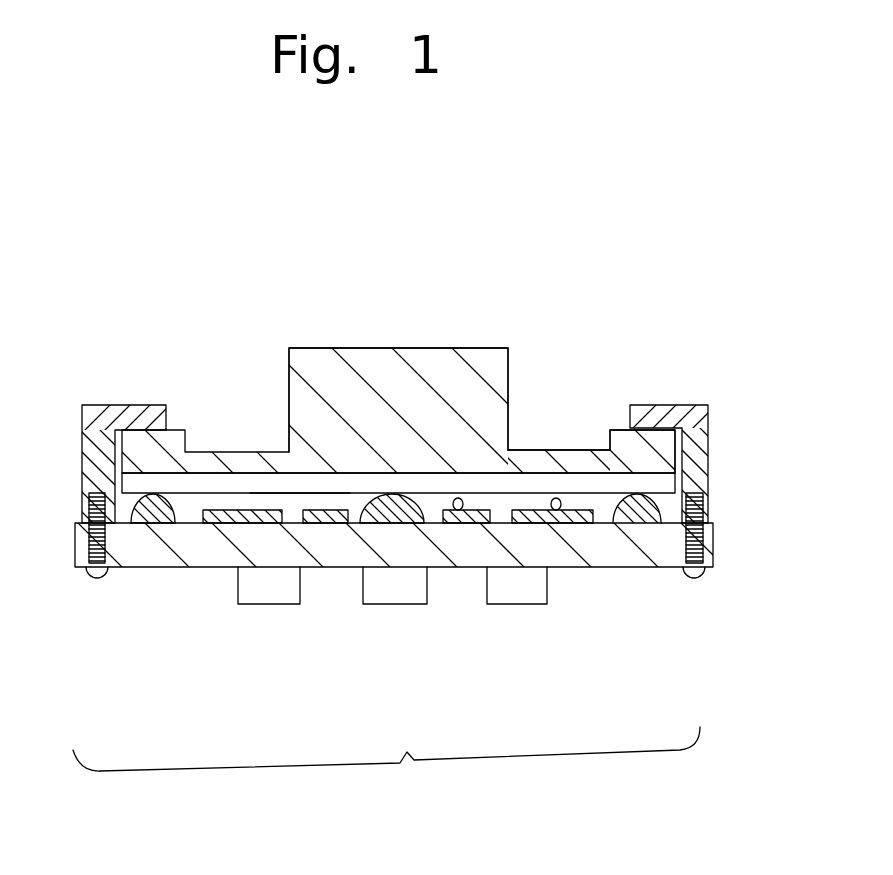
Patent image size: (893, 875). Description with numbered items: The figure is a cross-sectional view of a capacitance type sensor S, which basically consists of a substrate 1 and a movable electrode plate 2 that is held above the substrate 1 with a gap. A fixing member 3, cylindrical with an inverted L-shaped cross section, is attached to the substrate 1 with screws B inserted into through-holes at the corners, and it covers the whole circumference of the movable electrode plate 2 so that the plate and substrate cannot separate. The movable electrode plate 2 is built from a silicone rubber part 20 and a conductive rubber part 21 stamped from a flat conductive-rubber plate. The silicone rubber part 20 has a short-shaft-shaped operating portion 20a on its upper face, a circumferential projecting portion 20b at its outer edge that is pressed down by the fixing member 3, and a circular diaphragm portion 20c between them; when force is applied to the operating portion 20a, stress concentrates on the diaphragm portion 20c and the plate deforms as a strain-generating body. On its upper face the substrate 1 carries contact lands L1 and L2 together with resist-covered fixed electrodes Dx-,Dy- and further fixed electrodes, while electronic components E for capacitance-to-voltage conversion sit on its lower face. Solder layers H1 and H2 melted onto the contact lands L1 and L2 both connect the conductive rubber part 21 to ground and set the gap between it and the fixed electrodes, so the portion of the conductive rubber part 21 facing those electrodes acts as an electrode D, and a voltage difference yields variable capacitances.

The capacitance type sensor S is at (235, 333).
The substrate 1 is at (713, 538).
The movable electrode plate 2 is at (441, 344).
The silicone rubber part 20 is at (426, 337).
The operating portion 20a is at (443, 357).
The circumferential projecting portion 20b is at (640, 403).
The diaphragm portion 20c is at (543, 450).
The conductive rubber part 21 is at (658, 480).
The fixing member 3 is at (712, 448).
The screws B is at (95, 581).
The electronic components E is at (272, 597).
The electrode D is at (300, 483).
The solder layer H1 is at (134, 503).
The solder layer H2 is at (370, 497).
The contact land L1 is at (143, 522).
The contact land L2 is at (422, 525).
The fixed electrodes Dx-,Dy- is at (212, 521).